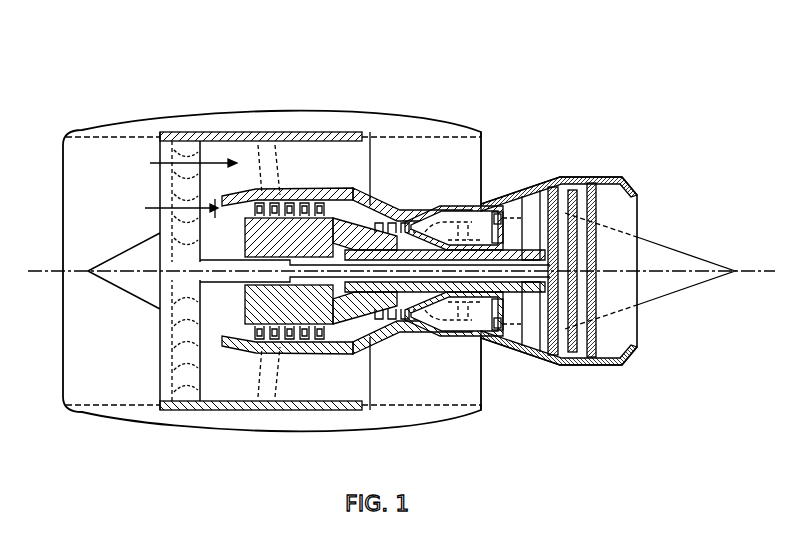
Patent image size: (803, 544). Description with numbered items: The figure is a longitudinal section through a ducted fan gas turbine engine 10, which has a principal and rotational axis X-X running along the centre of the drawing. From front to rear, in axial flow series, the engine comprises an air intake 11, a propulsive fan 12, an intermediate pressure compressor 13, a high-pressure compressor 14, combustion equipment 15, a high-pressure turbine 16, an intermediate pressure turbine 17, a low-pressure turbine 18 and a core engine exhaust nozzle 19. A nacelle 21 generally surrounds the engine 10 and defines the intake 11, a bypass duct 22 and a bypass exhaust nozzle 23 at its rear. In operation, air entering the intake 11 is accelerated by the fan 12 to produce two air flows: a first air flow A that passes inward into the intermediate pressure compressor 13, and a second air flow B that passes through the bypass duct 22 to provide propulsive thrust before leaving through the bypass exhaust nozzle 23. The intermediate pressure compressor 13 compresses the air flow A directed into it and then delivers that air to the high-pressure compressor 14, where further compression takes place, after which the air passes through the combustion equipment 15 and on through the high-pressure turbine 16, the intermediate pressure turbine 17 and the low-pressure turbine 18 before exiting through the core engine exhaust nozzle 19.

The ducted fan gas turbine engine 10 is at (100, 84).
The air intake 11 is at (107, 140).
The propulsive fan 12 is at (180, 370).
The intermediate pressure compressor 13 is at (303, 345).
The high-pressure compressor 14 is at (393, 214).
The combustion equipment 15 is at (452, 325).
The high-pressure turbine 16 is at (480, 338).
The intermediate pressure turbine 17 is at (527, 210).
The low-pressure turbine 18 is at (543, 350).
The core engine exhaust nozzle 19 is at (622, 180).
The nacelle 21 is at (305, 122).
The bypass duct 22 is at (442, 170).
The bypass exhaust nozzle 23 is at (481, 132).
The first air flow A is at (165, 209).
The second air flow B is at (180, 169).